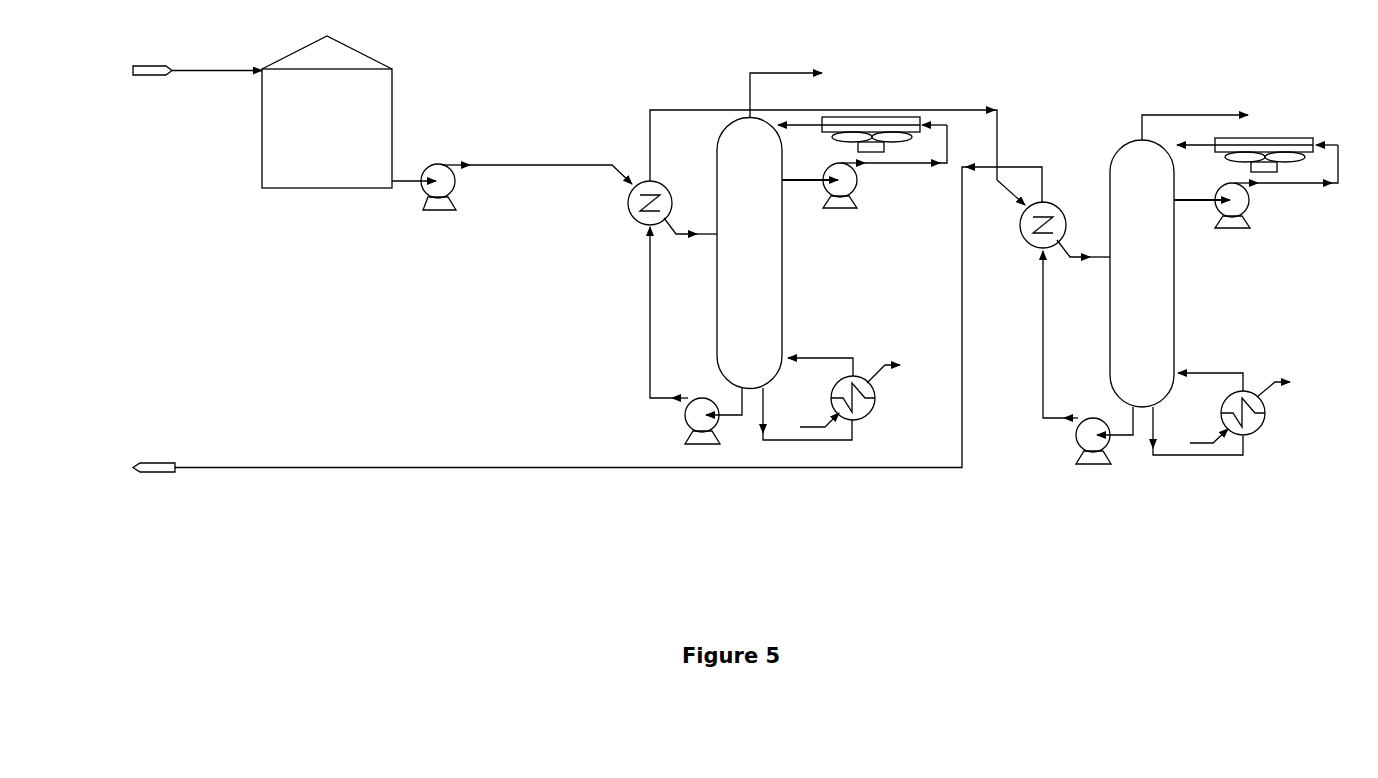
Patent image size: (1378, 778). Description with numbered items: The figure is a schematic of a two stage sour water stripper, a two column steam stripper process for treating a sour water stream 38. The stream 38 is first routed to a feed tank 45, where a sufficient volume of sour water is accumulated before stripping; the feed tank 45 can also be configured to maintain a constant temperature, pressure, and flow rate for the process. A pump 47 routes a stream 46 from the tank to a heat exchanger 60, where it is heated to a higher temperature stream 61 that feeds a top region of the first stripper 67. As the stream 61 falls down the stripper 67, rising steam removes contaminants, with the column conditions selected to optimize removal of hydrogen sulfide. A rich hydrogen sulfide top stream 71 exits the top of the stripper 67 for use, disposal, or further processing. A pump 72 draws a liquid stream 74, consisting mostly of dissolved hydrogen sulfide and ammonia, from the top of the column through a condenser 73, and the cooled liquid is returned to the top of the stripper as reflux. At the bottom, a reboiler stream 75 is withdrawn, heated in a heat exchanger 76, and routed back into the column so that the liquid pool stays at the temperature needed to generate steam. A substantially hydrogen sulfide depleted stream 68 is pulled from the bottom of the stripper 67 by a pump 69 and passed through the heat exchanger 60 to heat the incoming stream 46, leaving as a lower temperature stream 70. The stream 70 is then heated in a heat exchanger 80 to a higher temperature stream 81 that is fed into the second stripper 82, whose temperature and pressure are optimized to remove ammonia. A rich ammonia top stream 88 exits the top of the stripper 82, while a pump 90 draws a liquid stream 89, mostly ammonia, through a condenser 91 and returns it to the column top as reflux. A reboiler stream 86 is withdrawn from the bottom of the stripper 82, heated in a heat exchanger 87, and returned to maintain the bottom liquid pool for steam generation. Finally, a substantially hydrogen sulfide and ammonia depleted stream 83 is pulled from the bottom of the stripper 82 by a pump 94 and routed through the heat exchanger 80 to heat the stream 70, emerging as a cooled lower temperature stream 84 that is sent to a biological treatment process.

The stream 38 is at (175, 70).
The feed tank 45 is at (318, 139).
The stream 46 is at (512, 160).
The pump 47 is at (429, 237).
The heat exchanger 60 is at (583, 216).
The higher temperature stream 61 is at (690, 219).
The stripper 67 is at (738, 258).
The lower temperature stream 70 is at (837, 237).
The top stream 71 is at (808, 88).
The condenser 73 is at (799, 159).
The liquid stream 74 is at (810, 196).
The pump 72 is at (829, 238).
The stream 68 is at (719, 395).
The pump 69 is at (656, 463).
The reboiler stream 75 is at (807, 414).
The heat exchanger 76 is at (893, 415).
The lower temperature stream 84 is at (569, 324).
The heat exchanger 80 is at (988, 256).
The higher temperature stream 81 is at (1083, 239).
The second stripper 82 is at (1135, 284).
The top stream 88 is at (1195, 111).
The condenser 91 is at (1288, 137).
The liquid stream 89 is at (1202, 215).
The pump 90 is at (1224, 259).
The stream 83 is at (1088, 343).
The pump 94 is at (1085, 492).
The reboiler stream 86 is at (1198, 428).
The heat exchanger 87 is at (1278, 428).